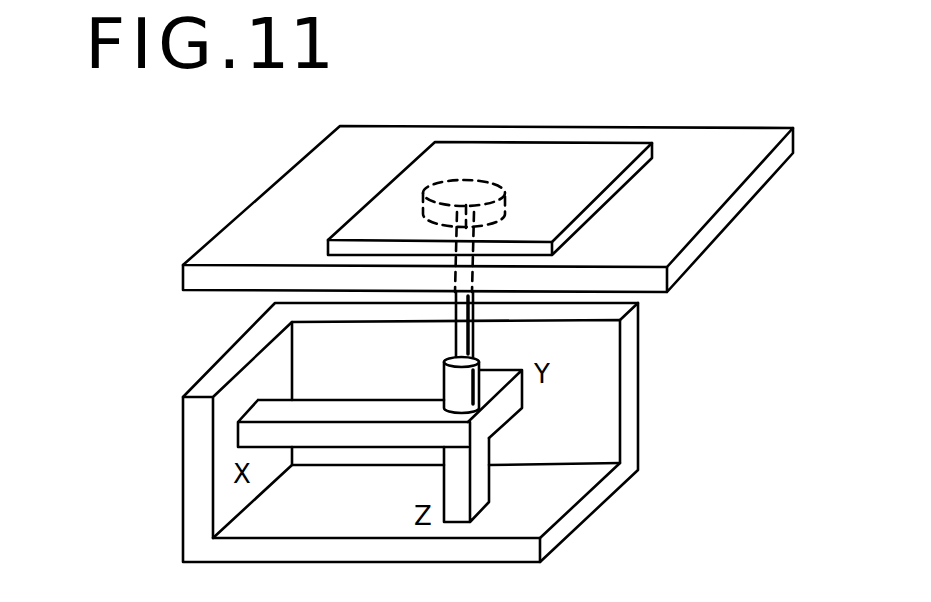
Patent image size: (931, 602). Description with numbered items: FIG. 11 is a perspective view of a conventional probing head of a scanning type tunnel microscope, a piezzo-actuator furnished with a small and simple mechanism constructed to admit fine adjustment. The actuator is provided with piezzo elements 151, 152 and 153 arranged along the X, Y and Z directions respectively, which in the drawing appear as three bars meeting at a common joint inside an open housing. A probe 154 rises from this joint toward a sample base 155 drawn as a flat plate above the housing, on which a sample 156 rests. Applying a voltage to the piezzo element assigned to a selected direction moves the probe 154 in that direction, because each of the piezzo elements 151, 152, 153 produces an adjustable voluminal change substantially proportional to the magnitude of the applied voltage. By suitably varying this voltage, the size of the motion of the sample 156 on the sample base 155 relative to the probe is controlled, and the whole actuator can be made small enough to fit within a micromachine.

The piezzo element 151 is at (332, 438).
The piezzo element 152 is at (498, 413).
The piezzo element 153 is at (478, 498).
The probe 154 is at (450, 280).
The sample base 155 is at (705, 207).
The sample 156 is at (467, 182).